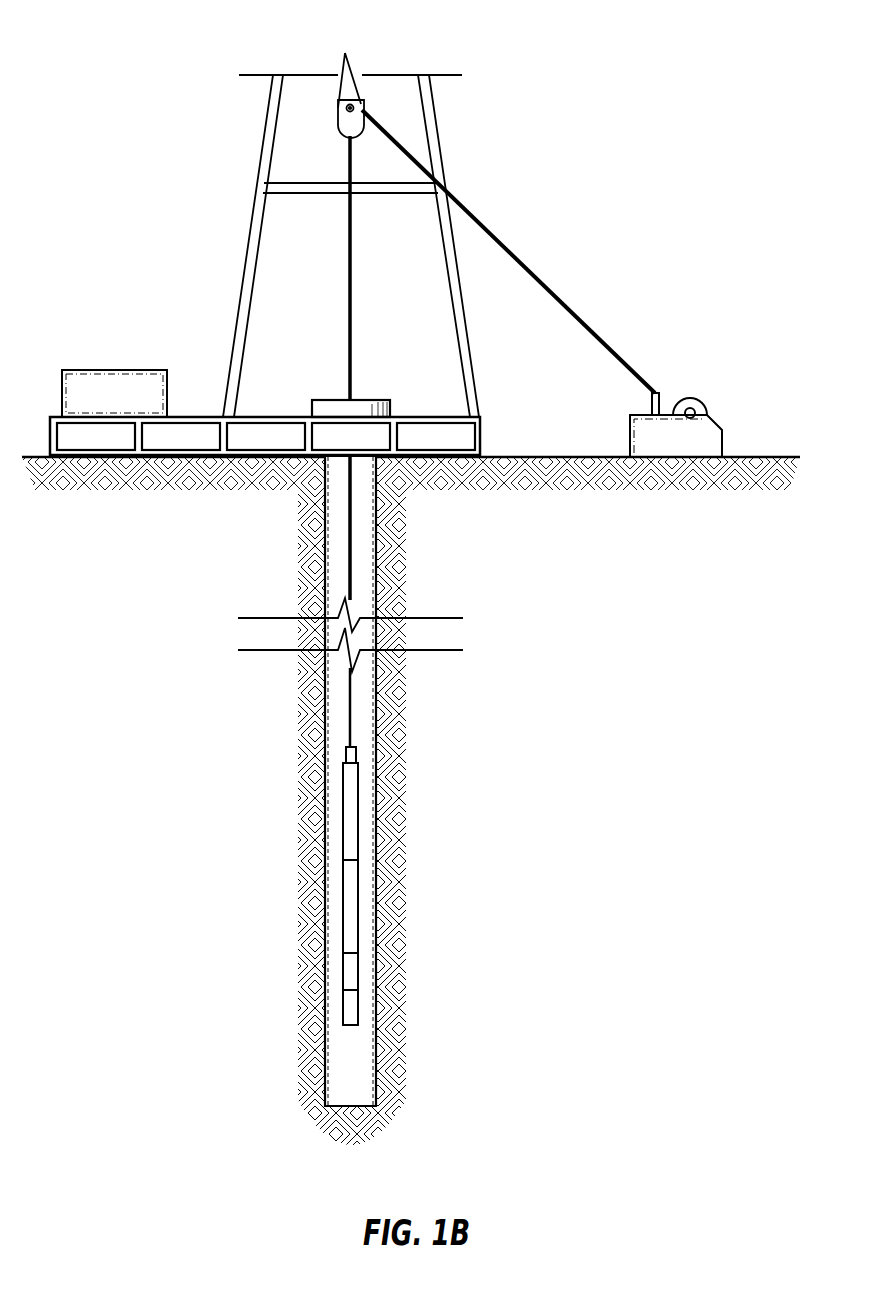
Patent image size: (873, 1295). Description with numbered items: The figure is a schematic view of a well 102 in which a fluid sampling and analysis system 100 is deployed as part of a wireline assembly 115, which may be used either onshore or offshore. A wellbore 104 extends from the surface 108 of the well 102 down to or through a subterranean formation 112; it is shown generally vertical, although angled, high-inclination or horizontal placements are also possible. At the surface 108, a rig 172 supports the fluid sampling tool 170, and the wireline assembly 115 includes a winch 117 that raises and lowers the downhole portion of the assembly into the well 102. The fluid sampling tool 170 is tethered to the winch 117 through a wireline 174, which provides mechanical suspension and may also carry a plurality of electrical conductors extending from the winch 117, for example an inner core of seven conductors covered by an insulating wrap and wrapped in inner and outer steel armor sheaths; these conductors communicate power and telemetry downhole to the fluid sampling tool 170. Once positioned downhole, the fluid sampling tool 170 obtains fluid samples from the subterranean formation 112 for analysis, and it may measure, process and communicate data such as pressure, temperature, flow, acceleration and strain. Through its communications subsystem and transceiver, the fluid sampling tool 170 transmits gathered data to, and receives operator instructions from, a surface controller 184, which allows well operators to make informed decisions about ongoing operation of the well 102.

The fluid sampling and analysis system 100 is at (126, 50).
The well 102 is at (396, 376).
The wellbore 104 is at (328, 768).
The surface 108 is at (740, 457).
The subterranean formation 112 is at (323, 1118).
The wireline assembly 115 is at (369, 783).
The winch 117 is at (630, 435).
The fluid sampling tool 170 is at (347, 972).
The rig 172 is at (443, 152).
The wireline 174 is at (560, 301).
The surface controller 184 is at (115, 370).